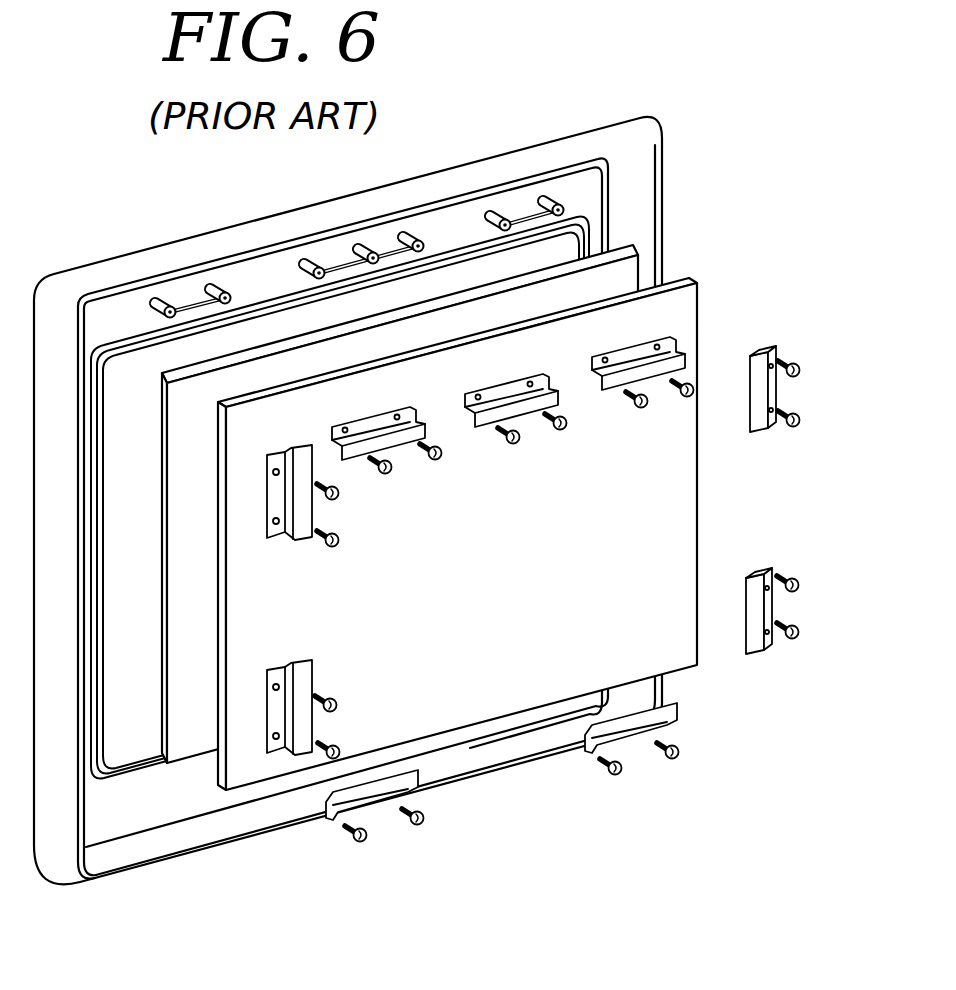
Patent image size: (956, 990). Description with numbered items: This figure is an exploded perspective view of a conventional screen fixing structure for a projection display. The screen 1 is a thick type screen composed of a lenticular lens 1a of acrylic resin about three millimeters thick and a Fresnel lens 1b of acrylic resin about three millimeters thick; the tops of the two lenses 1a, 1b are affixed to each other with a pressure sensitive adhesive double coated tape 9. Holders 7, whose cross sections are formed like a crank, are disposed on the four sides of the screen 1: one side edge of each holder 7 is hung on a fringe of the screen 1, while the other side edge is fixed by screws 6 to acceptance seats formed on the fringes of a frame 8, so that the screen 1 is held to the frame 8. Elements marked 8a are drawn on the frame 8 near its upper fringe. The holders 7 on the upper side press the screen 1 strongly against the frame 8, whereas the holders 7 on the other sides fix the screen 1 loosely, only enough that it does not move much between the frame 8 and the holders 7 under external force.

The screen 1 is at (500, 510).
The lenticular lens 1a is at (632, 281).
The Fresnel lens 1b is at (672, 330).
The screws 6 is at (805, 418).
The holders 7 is at (770, 352).
The frame 8 is at (622, 135).
The hook 8a is at (180, 283).
The pressure sensitive adhesive double coated tape 9 is at (413, 308).